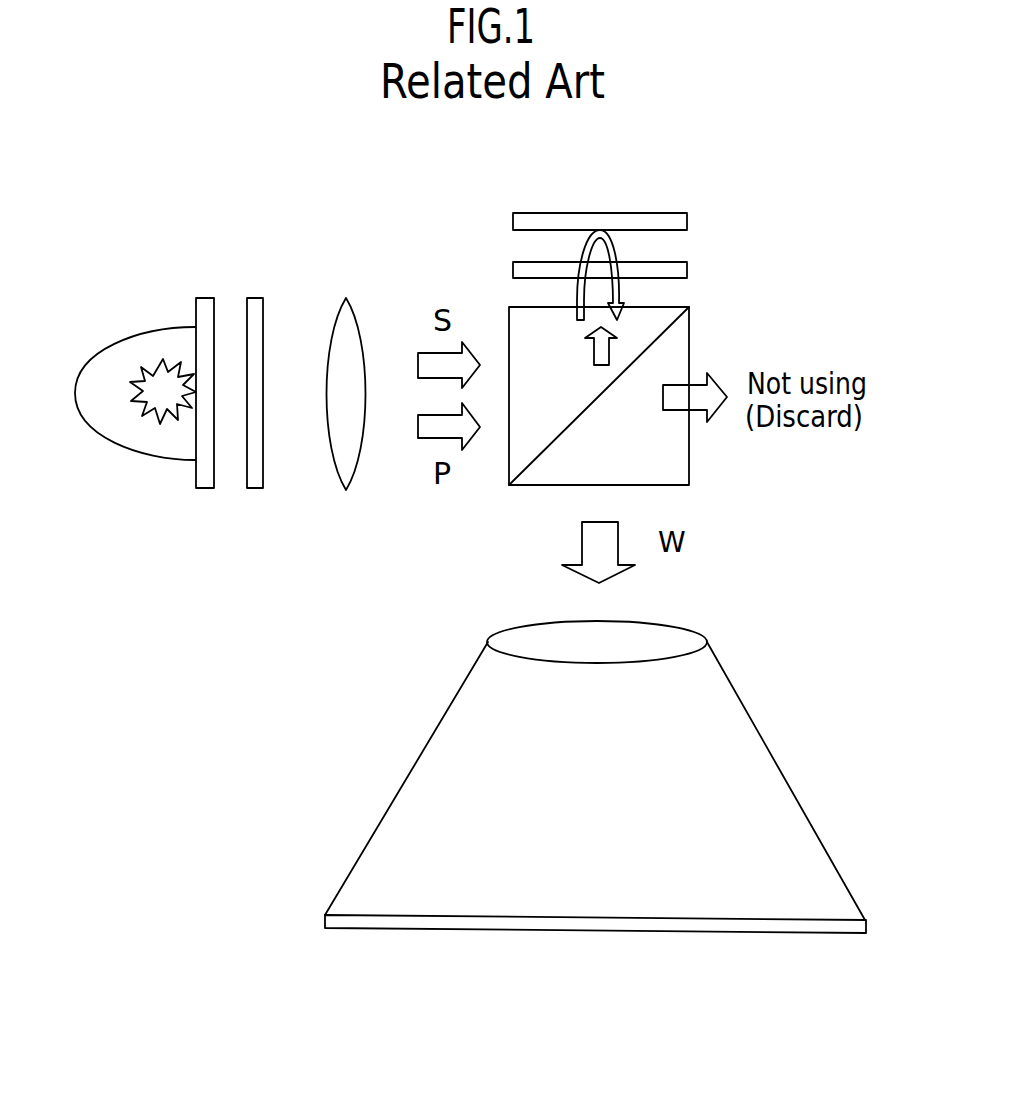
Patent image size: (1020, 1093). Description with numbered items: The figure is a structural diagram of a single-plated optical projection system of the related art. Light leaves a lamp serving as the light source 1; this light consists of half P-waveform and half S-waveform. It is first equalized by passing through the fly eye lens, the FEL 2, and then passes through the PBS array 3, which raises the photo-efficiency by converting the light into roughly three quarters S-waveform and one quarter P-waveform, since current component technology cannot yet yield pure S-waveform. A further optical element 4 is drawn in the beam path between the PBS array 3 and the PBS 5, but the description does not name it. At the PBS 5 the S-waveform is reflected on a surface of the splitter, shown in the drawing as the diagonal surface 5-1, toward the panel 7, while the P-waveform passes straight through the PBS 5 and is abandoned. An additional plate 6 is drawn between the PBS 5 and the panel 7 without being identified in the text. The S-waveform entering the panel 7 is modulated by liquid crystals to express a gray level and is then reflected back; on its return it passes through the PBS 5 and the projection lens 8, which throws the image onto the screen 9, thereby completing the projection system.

The light source 1 is at (142, 330).
The FEL (fly eye lens) 2 is at (204, 488).
The PBS array 3 is at (253, 488).
The condenser lens 4 is at (347, 490).
The PBS 5 is at (683, 463).
The polarization splitting surface 5-1 is at (670, 333).
The quarter wave plate 6 is at (687, 272).
The panel 7 is at (687, 222).
The projection lens 8 is at (695, 635).
The screen 9 is at (325, 920).